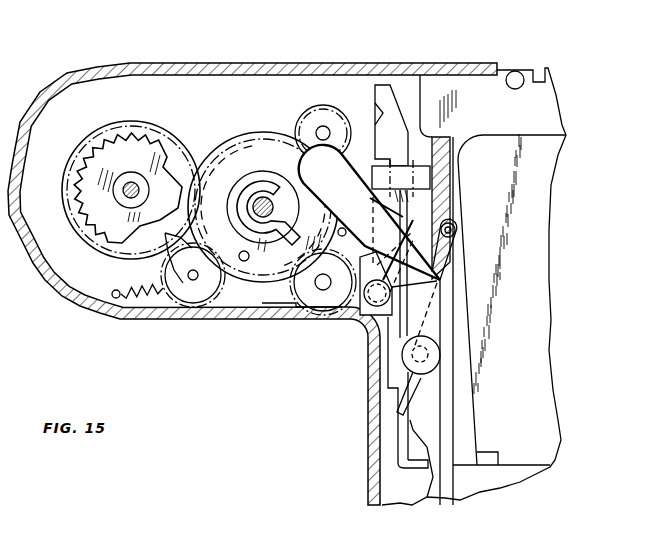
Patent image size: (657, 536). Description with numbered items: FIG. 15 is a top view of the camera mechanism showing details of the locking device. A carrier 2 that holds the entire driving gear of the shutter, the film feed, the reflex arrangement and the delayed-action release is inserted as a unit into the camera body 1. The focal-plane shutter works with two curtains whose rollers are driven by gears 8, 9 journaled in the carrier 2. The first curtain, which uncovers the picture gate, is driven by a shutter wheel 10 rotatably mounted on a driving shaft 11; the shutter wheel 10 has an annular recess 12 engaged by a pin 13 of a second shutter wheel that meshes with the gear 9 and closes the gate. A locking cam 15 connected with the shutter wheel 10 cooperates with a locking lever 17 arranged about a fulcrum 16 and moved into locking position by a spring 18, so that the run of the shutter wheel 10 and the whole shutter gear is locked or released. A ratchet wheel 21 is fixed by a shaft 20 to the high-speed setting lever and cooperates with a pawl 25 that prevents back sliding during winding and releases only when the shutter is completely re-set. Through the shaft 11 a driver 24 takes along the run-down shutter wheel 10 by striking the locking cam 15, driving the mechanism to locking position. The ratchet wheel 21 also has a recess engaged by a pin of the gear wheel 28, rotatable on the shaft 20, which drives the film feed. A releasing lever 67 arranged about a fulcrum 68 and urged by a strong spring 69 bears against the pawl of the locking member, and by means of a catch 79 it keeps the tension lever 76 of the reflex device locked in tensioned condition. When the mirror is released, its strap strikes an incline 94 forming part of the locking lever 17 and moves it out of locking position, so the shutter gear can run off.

The camera body 1 is at (100, 108).
The carrier 2 is at (510, 120).
The gear 8 is at (318, 120).
The gear 9 is at (313, 282).
The shutter wheel 10 is at (220, 183).
The driving shaft 11 is at (258, 178).
The annular recess 12 is at (207, 170).
The pin 13 is at (242, 258).
The locking cam 15 is at (263, 196).
The fulcrum 16 is at (412, 358).
The locking lever 17 is at (350, 180).
The spring 18 is at (437, 283).
The shaft 20 is at (130, 178).
The ratchet wheel 21 is at (97, 163).
The driver 24 is at (280, 237).
The pawl 25 is at (187, 298).
The gear wheel 28 is at (68, 196).
The releasing lever 67 is at (370, 292).
The fulcrum 68 is at (362, 315).
The spring 69 is at (402, 158).
The tension lever 76 is at (414, 178).
The catch 79 is at (377, 155).
The incline 94 is at (413, 465).